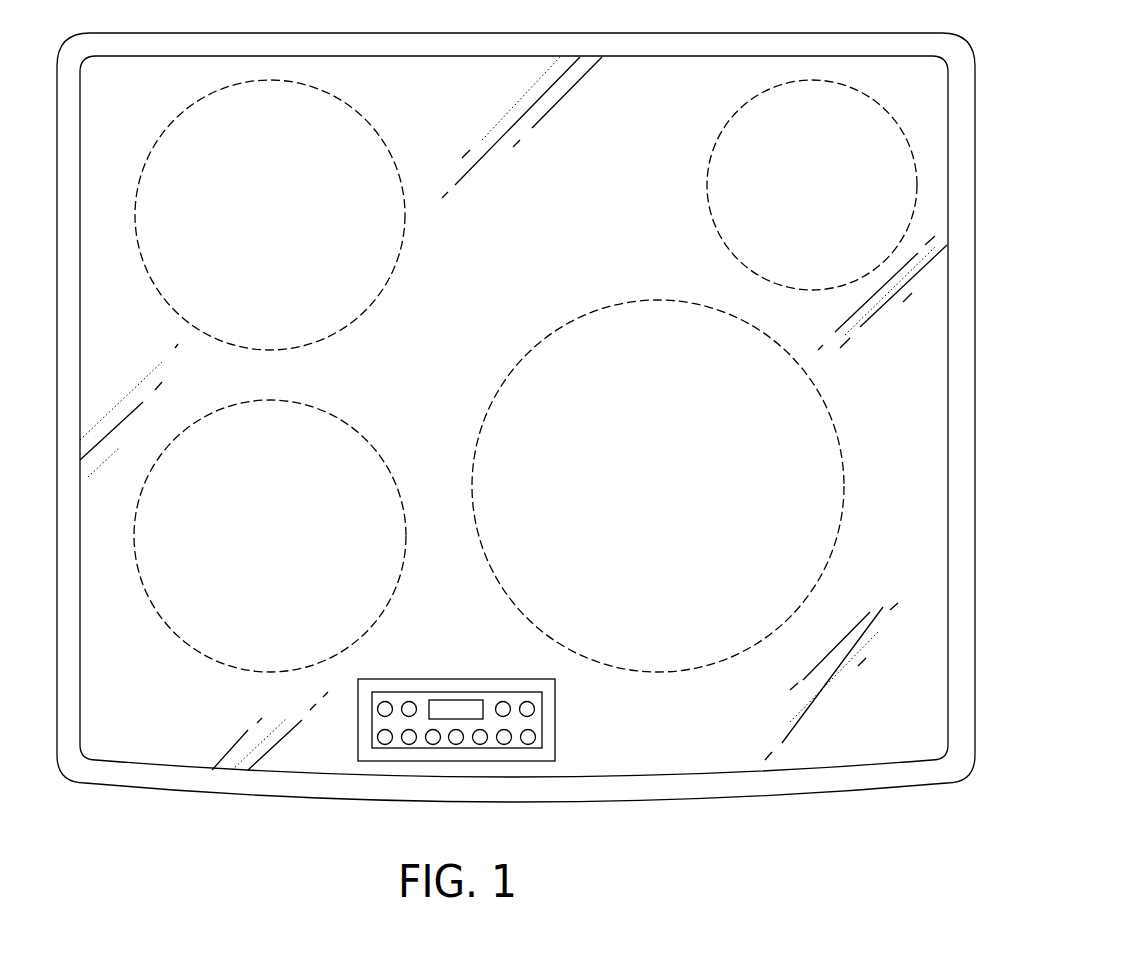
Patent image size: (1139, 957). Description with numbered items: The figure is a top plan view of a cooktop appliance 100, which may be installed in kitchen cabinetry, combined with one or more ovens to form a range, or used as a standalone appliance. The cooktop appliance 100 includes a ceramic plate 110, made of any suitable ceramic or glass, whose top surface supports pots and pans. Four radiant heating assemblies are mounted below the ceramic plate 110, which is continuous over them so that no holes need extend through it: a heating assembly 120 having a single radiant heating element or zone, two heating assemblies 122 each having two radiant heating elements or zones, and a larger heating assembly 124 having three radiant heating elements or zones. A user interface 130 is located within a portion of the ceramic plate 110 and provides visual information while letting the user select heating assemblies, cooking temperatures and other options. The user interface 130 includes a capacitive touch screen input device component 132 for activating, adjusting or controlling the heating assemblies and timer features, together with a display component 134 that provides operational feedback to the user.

The cooktop appliance 100 is at (1037, 188).
The ceramic plate 110 is at (918, 368).
The heating assembly 120 is at (727, 120).
The heating assemblies 122 is at (370, 112).
The heating assembly 124 is at (608, 305).
The user interface 130 is at (417, 730).
The capacitive touch screen input device component 132 is at (382, 702).
The display component 134 is at (441, 702).